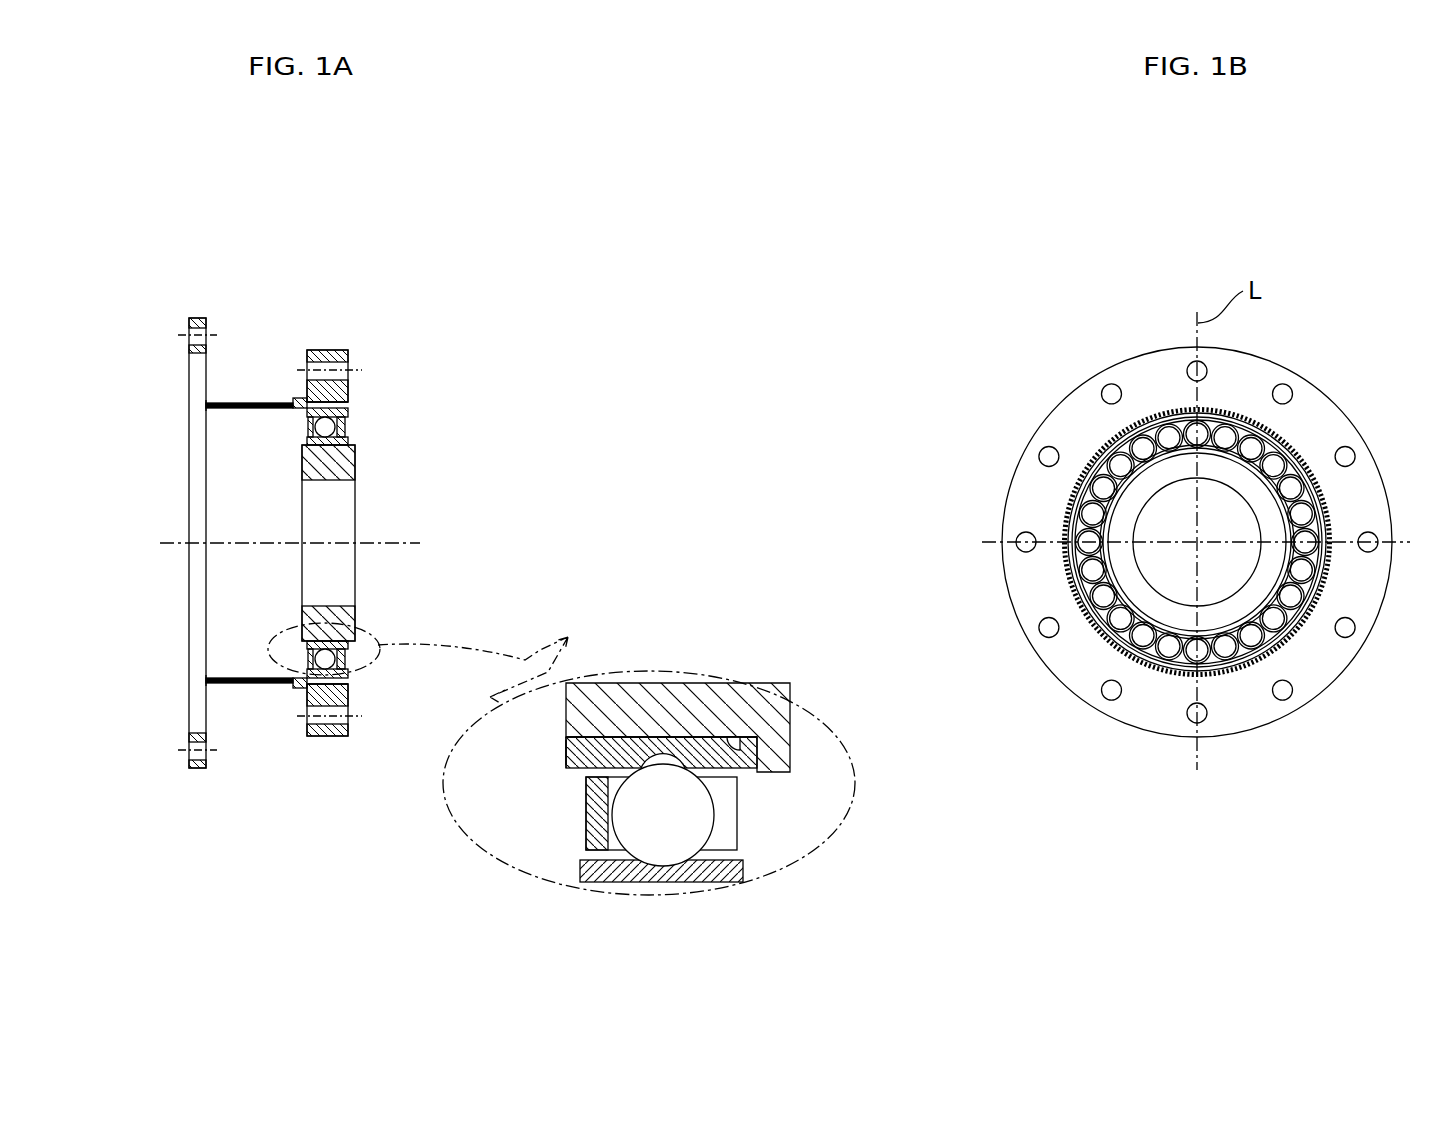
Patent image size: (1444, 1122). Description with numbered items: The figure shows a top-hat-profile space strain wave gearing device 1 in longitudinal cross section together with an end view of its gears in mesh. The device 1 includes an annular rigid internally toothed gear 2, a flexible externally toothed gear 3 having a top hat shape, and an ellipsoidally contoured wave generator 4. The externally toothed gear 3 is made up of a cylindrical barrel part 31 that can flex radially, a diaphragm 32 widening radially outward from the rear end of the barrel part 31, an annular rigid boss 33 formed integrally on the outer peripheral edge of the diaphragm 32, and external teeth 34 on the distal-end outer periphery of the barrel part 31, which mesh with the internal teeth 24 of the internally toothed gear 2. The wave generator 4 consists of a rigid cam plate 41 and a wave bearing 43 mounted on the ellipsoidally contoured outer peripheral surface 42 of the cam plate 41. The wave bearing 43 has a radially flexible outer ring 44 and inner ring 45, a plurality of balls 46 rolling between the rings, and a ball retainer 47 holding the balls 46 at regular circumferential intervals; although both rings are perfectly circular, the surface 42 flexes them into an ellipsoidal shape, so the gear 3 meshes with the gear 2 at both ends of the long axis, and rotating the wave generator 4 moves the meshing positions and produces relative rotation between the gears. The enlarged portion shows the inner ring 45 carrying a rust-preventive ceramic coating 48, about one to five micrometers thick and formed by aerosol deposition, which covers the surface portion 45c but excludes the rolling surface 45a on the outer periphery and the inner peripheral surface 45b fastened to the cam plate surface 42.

In FIG. 1A, the strain wave gearing device 1 is at (338, 298).
In FIG. 1B, the strain wave gearing device 1 is at (1085, 358).
In FIG. 1A, the rigid internally toothed gear 2 is at (352, 390).
In FIG. 1B, the rigid internally toothed gear 2 is at (1303, 435).
In FIG. 1A, the flexible externally toothed gear 3 is at (268, 403).
In FIG. 1B, the flexible externally toothed gear 3 is at (1318, 478).
In FIG. 1A, the wave generator 4 is at (383, 440).
In FIG. 1B, the wave generator 4 is at (1307, 587).
In FIG. 1A, the internal teeth 24 is at (300, 672).
In FIG. 1B, the internal teeth 24 is at (1072, 527).
In FIG. 1A, the cylindrical barrel part 31 is at (268, 683).
In FIG. 1A, the diaphragm 32 is at (213, 703).
In FIG. 1A, the annular rigid boss 33 is at (188, 757).
In FIG. 1A, the external teeth 34 is at (335, 685).
In FIG. 1B, the external teeth 34 is at (1060, 553).
In FIG. 1A, the rigid cam plate 41 is at (357, 468).
In FIG. 1B, the rigid cam plate 41 is at (1183, 628).
In FIG. 1A, the ellipsoidally contoured outer peripheral surface 42 is at (302, 432).
In FIG. 1B, the ellipsoidally contoured outer peripheral surface 42 is at (1163, 637).
In FIG. 1A, the wave bearing 43 is at (352, 416).
In FIG. 1B, the wave bearing 43 is at (1077, 768).
In FIG. 1A, the outer ring 44 is at (340, 668).
In FIG. 1B, the outer ring 44 is at (1160, 650).
In FIG. 1A, the inner ring 45 is at (333, 640).
In FIG. 1B, the inner ring 45 is at (1142, 640).
In FIG. 1A, the rolling surface 45a is at (648, 757).
In FIG. 1A, the inner peripheral surface 45b is at (733, 750).
In FIG. 1A, the surface portion 45c is at (578, 768).
In FIG. 1A, the balls 46 is at (330, 652).
In FIG. 1B, the balls 46 is at (1118, 625).
In FIG. 1A, the ball retainer 47 is at (350, 660).
In FIG. 1B, the ball retainer 47 is at (1098, 618).
In FIG. 1A, the ceramic coating 48 is at (562, 752).